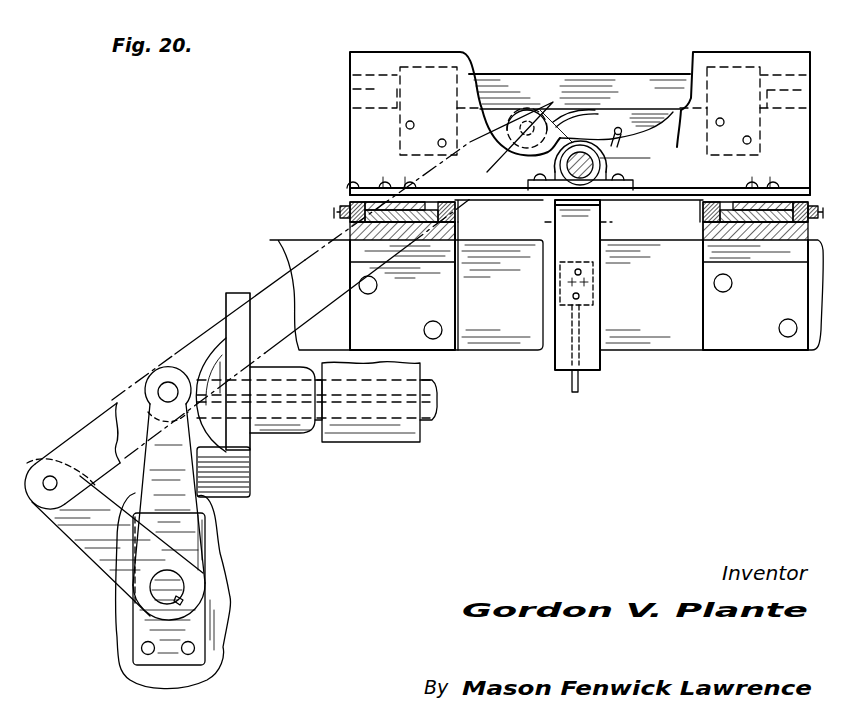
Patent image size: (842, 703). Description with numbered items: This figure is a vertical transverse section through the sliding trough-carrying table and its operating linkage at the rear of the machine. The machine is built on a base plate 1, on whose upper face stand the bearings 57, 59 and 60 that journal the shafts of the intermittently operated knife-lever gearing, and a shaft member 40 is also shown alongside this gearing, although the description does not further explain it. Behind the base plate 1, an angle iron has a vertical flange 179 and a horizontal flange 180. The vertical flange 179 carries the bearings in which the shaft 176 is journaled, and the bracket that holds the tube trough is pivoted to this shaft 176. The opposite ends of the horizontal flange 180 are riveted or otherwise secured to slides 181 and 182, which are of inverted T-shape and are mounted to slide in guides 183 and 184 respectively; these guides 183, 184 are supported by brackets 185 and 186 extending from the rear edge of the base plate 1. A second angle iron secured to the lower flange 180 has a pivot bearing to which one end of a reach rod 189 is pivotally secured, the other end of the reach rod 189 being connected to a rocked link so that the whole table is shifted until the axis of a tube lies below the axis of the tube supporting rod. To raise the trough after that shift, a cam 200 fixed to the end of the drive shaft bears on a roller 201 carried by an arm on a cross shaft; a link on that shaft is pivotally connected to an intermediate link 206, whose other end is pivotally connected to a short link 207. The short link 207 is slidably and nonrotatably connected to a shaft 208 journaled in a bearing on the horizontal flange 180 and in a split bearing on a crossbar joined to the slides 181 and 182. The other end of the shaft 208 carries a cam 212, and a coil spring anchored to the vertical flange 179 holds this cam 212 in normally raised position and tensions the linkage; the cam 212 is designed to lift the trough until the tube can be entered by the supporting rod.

The base plate 1 is at (224, 552).
The shaft 40 is at (440, 400).
The bearing 57 is at (250, 462).
The bearing 59 is at (183, 592).
The bearing 60 is at (95, 570).
The shaft 176 is at (637, 86).
The vertical flange 179 is at (352, 71).
The horizontal flange 180 is at (352, 189).
The slide 181 is at (350, 228).
The slide 182 is at (755, 228).
The guide 183 is at (458, 210).
The guide 184 is at (703, 212).
The bracket 185 is at (458, 346).
The bracket 186 is at (718, 344).
The reach rod 189 is at (580, 385).
The cam 200 is at (235, 295).
The roller 201 is at (160, 375).
The intermediate link 206 is at (82, 434).
The short link 207 is at (530, 160).
The shaft 208 is at (606, 163).
The cam 212 is at (677, 133).